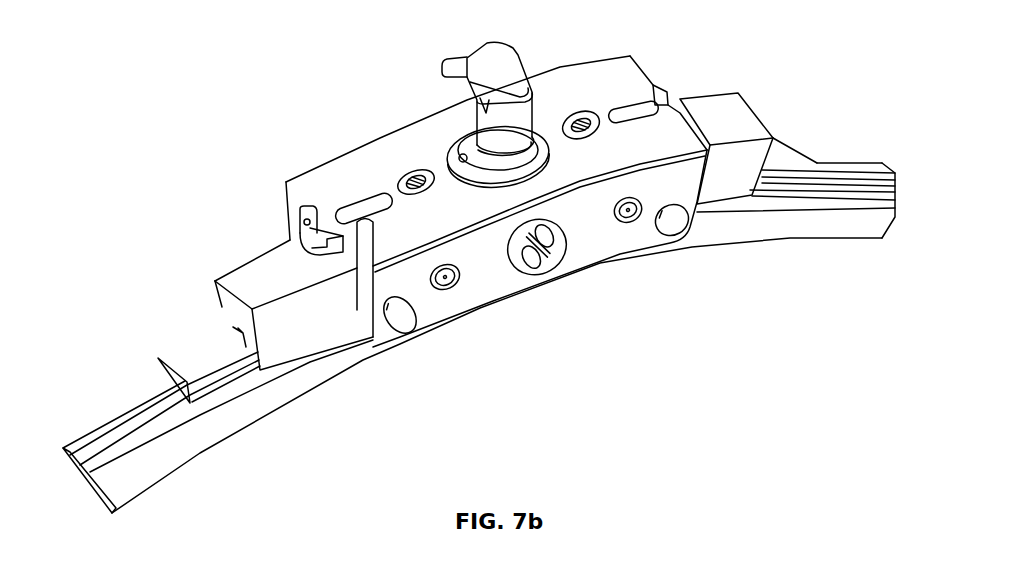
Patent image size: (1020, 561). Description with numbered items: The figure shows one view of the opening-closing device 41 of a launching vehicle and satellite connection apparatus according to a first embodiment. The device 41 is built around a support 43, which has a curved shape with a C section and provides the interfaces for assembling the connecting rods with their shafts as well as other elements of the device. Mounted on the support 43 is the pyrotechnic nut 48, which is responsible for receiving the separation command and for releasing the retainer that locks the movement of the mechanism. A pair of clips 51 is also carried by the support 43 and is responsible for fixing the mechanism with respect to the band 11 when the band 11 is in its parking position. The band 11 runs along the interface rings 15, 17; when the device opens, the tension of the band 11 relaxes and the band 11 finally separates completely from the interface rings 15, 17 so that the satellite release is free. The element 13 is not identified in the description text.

The band 11 is at (730, 122).
The clamping bracket 13 is at (183, 355).
The interface ring 15 is at (83, 440).
The interface ring 17 is at (471, 338).
The opening-closing device 41 is at (195, 228).
The support 43 is at (328, 180).
The pyrotechnic nut 48 is at (517, 60).
The clips 51 is at (290, 228).